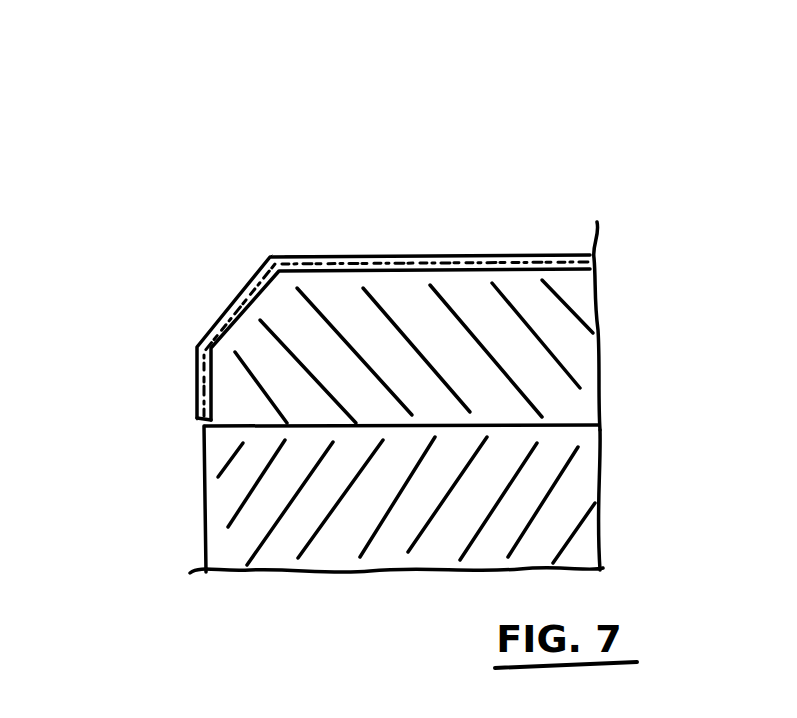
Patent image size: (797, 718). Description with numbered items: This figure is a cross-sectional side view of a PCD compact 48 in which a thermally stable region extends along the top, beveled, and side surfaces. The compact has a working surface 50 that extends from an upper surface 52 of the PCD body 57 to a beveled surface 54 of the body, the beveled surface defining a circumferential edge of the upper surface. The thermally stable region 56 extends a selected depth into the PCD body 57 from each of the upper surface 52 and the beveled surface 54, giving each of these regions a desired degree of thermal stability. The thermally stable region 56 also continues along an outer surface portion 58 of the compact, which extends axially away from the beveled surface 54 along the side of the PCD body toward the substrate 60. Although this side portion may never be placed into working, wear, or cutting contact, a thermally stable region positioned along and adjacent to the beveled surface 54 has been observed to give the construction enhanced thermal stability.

The PCD compact 48 is at (523, 197).
The working surface 50 is at (243, 290).
The upper surface 52 is at (428, 255).
The beveled surface 54 is at (208, 335).
The thermally stable region 56 is at (235, 305).
The PCD body 57 is at (555, 350).
The outer surface portion 58 is at (197, 392).
The substrate 60 is at (537, 492).